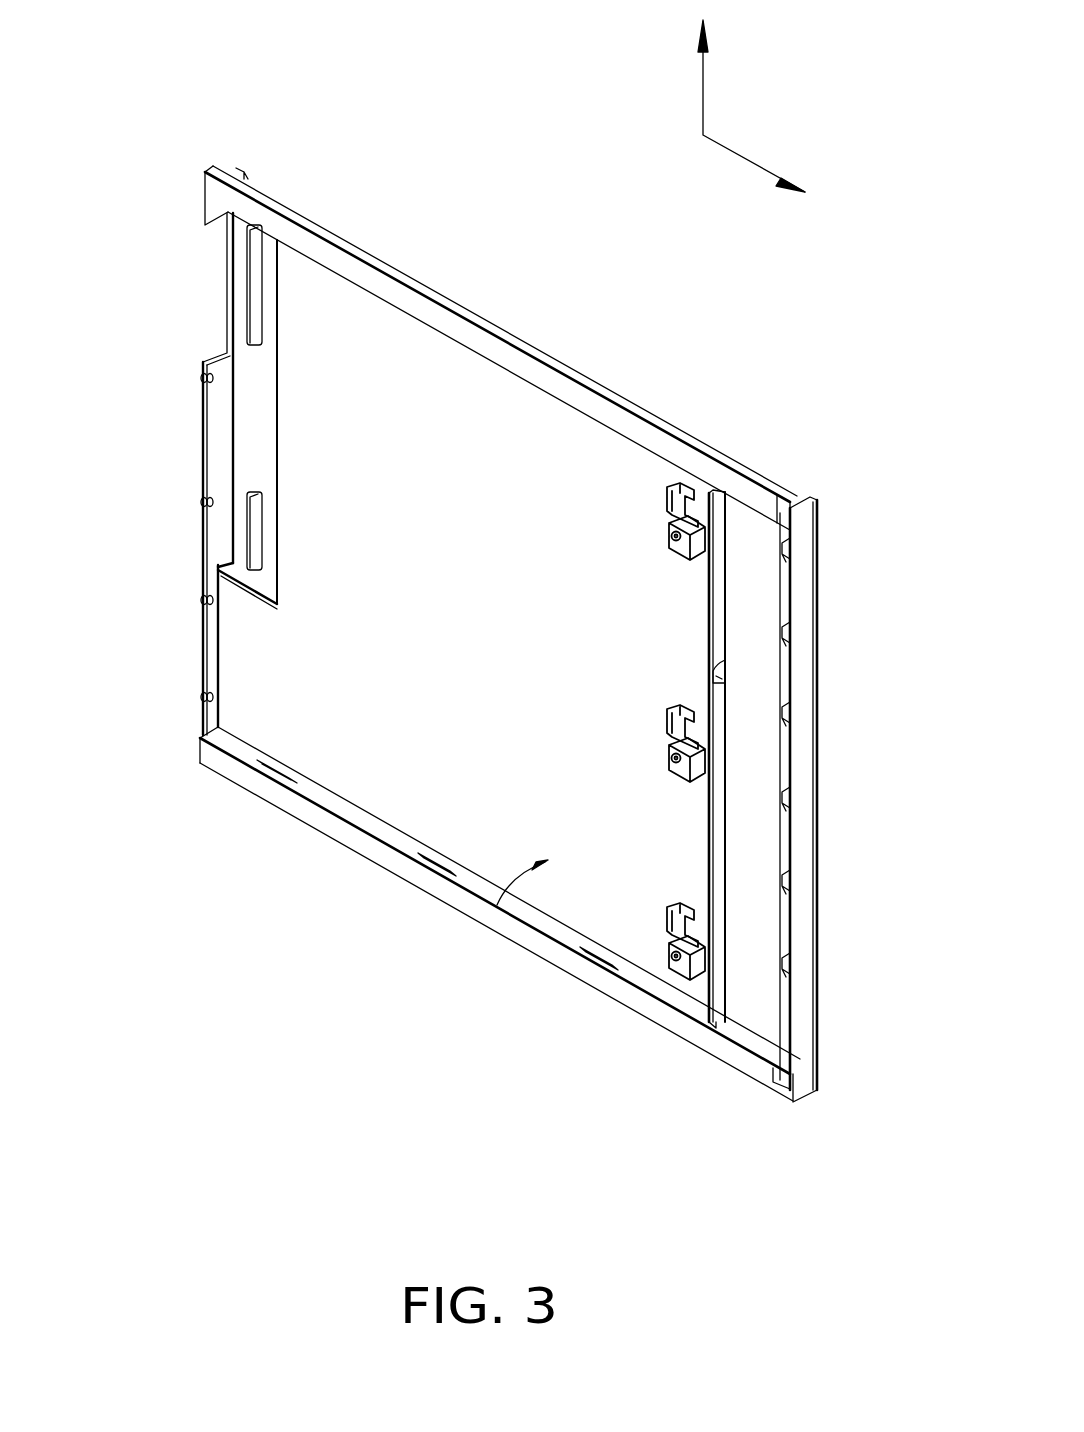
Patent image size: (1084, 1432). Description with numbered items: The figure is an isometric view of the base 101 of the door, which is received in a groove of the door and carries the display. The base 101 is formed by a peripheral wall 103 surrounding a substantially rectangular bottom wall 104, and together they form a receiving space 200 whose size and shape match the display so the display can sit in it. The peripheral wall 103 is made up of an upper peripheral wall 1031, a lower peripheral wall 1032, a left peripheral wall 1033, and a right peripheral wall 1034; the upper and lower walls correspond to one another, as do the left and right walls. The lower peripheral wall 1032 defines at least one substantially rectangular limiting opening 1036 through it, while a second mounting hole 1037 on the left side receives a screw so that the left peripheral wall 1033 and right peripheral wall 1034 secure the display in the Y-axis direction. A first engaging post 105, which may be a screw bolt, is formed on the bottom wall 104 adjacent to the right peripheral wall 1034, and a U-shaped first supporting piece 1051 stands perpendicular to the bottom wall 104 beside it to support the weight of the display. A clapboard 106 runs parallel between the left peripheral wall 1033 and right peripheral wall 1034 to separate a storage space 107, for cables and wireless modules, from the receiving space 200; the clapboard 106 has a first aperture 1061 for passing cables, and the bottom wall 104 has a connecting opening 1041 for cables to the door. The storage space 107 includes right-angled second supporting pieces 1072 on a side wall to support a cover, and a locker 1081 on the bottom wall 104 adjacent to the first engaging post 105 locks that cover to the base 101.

The base 101 is at (258, 53).
The peripheral wall 103 is at (700, 446).
The upper peripheral wall 1031 is at (572, 398).
The lower peripheral wall 1032 is at (620, 988).
The left peripheral wall 1033 is at (203, 430).
The right peripheral wall 1034 is at (805, 752).
The limiting opening 1036 is at (432, 868).
The second mounting hole 1037 is at (205, 505).
The bottom wall 104 is at (405, 778).
The connecting opening 1041 is at (255, 290).
The first engaging post 105 is at (662, 921).
The first supporting piece 1051 is at (700, 936).
The clapboard 106 is at (716, 603).
The first aperture 1061 is at (718, 673).
The storage space 107 is at (762, 848).
The second supporting pieces 1072 is at (790, 954).
The locker 1081 is at (680, 972).
The receiving space 200 is at (497, 905).